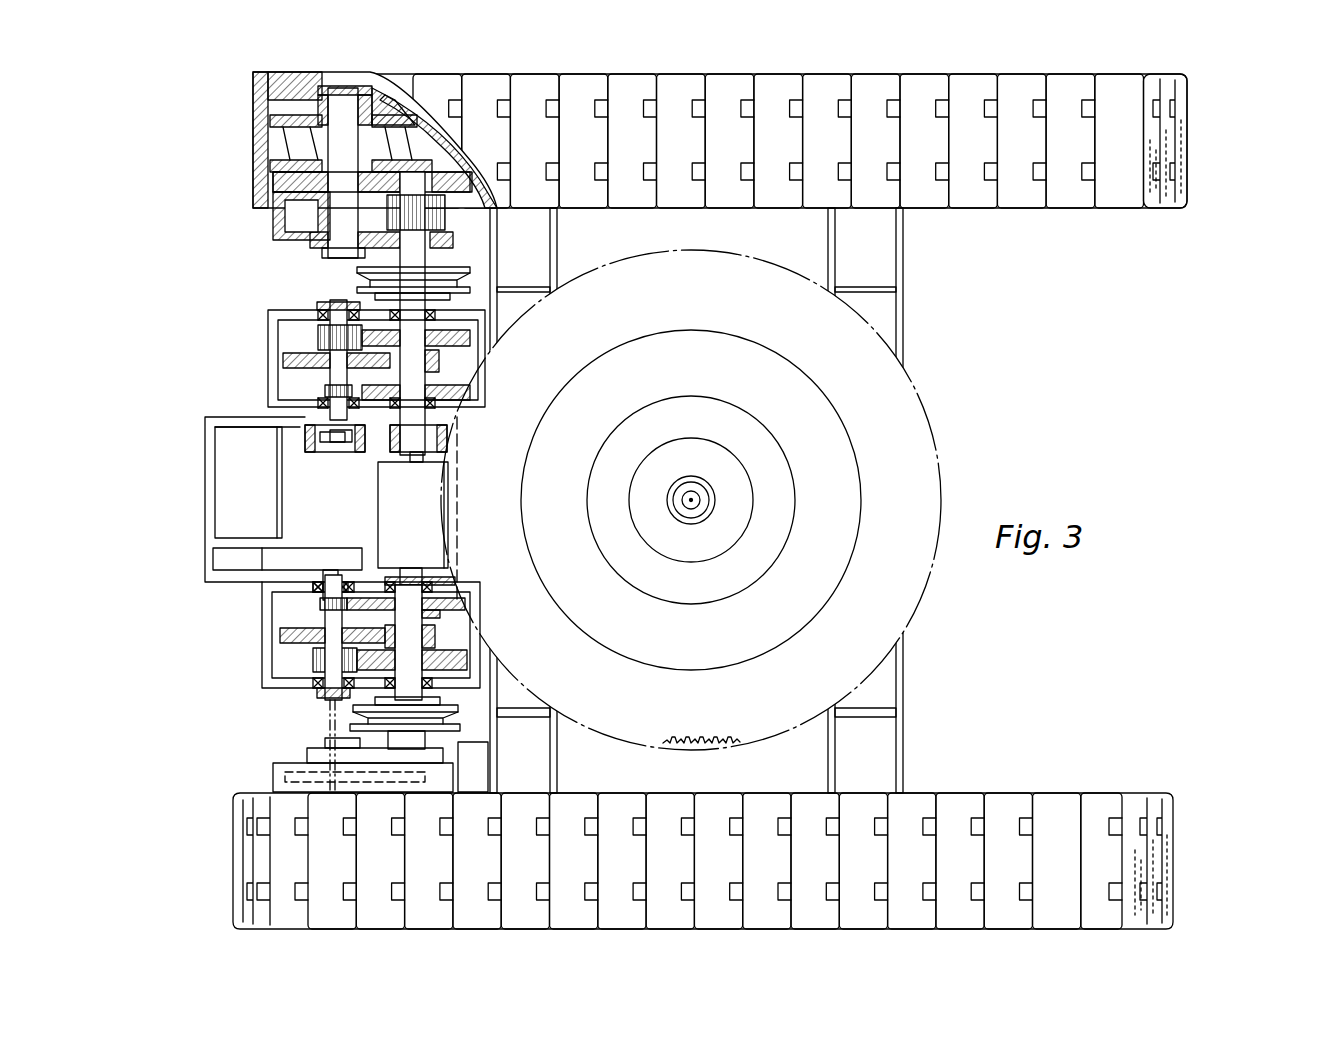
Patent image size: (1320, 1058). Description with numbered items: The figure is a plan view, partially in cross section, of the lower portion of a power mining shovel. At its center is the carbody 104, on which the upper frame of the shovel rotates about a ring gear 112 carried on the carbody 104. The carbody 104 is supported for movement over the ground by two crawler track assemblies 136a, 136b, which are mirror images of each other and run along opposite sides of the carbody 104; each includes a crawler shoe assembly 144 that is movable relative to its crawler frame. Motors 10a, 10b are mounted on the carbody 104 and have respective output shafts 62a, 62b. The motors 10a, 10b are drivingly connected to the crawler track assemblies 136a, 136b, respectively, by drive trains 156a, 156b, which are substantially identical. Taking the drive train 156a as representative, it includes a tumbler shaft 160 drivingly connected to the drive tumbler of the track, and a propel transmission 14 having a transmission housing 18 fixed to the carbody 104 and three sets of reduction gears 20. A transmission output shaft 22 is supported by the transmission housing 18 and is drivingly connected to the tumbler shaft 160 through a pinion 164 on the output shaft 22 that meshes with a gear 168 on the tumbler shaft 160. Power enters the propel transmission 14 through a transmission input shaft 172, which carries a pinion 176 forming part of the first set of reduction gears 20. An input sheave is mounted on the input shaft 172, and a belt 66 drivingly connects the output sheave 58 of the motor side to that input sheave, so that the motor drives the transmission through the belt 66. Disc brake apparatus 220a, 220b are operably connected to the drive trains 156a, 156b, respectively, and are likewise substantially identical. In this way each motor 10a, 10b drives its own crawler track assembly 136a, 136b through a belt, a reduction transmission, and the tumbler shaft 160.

The motor 10a is at (417, 508).
The motor 10b is at (248, 482).
The propel transmission 14 is at (337, 490).
The transmission housing 18 is at (268, 312).
The reduction gears 20 is at (290, 338).
The transmission output shaft 22 is at (428, 262).
The output sheave 58 is at (440, 449).
The output shaft 62a is at (424, 457).
The output shaft 62b is at (262, 566).
The belt 66 is at (305, 437).
The carbody 104 is at (903, 317).
The ring gear 112 is at (690, 746).
The crawler track assembly 136a is at (776, 501).
The crawler track assembly 136b is at (1182, 860).
The crawler shoe assembly 144 is at (1078, 208).
The drive train 156a is at (337, 477).
The drive train 156b is at (258, 706).
The tumbler shaft 160 is at (340, 128).
The pinion 164 is at (447, 225).
The gear 168 is at (298, 208).
The transmission input shaft 172 is at (342, 460).
The pinion 176 is at (333, 392).
The disc brake apparatus 220a is at (283, 509).
The disc brake apparatus 220b is at (326, 562).